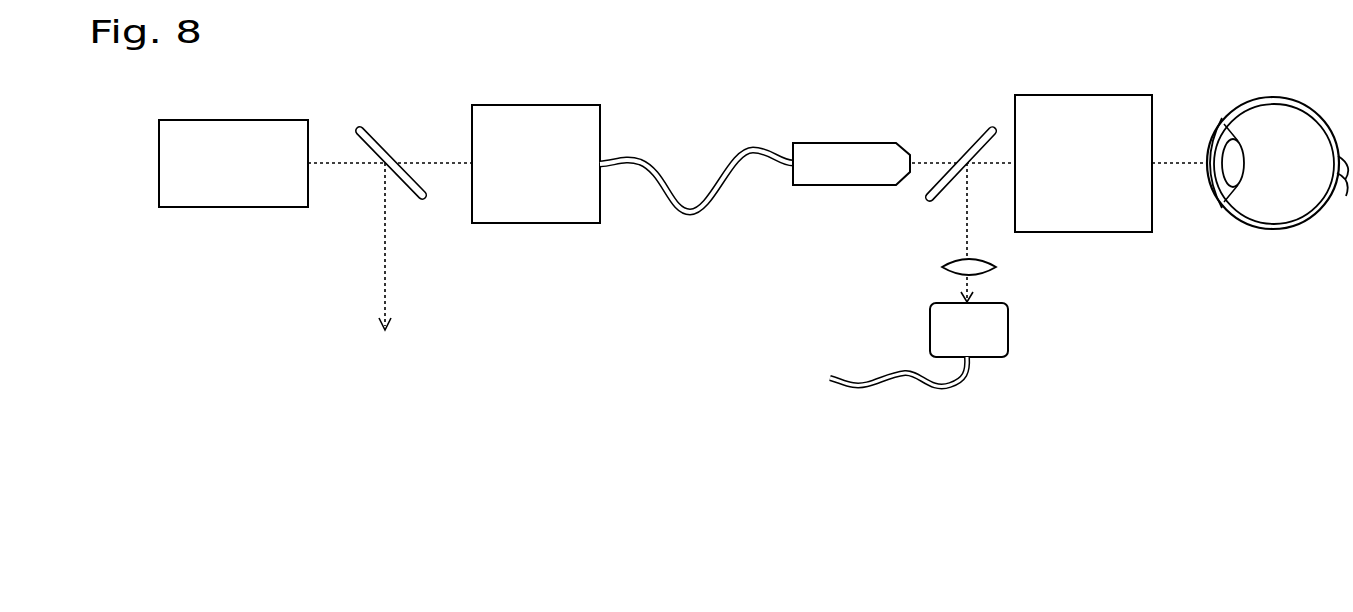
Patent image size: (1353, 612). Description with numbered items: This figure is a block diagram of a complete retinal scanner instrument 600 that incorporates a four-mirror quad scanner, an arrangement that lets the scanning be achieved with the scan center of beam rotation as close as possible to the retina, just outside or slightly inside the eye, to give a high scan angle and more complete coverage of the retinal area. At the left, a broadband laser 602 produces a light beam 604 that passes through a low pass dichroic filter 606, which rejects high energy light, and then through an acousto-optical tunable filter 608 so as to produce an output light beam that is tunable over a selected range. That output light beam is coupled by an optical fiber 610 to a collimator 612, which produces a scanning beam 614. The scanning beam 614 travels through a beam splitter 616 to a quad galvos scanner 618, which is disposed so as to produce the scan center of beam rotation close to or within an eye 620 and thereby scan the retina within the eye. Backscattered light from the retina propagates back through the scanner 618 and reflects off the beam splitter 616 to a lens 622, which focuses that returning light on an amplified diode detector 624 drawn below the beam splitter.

The retinal scanner instrument 600 is at (1146, 46).
The broadband laser 602 is at (253, 177).
The light beam 604 is at (360, 166).
The low pass dichroic filter 606 is at (383, 157).
The acousto-optical tunable filter 608 is at (556, 177).
The optical fiber 610 is at (690, 206).
The collimator 612 is at (868, 176).
The scanning beam 614 is at (928, 168).
The beam splitter 616 is at (965, 157).
The quad galvos scanner 618 is at (1100, 177).
The eye 620 is at (1303, 177).
The lens 622 is at (998, 268).
The amplified diode detector 624 is at (919, 344).